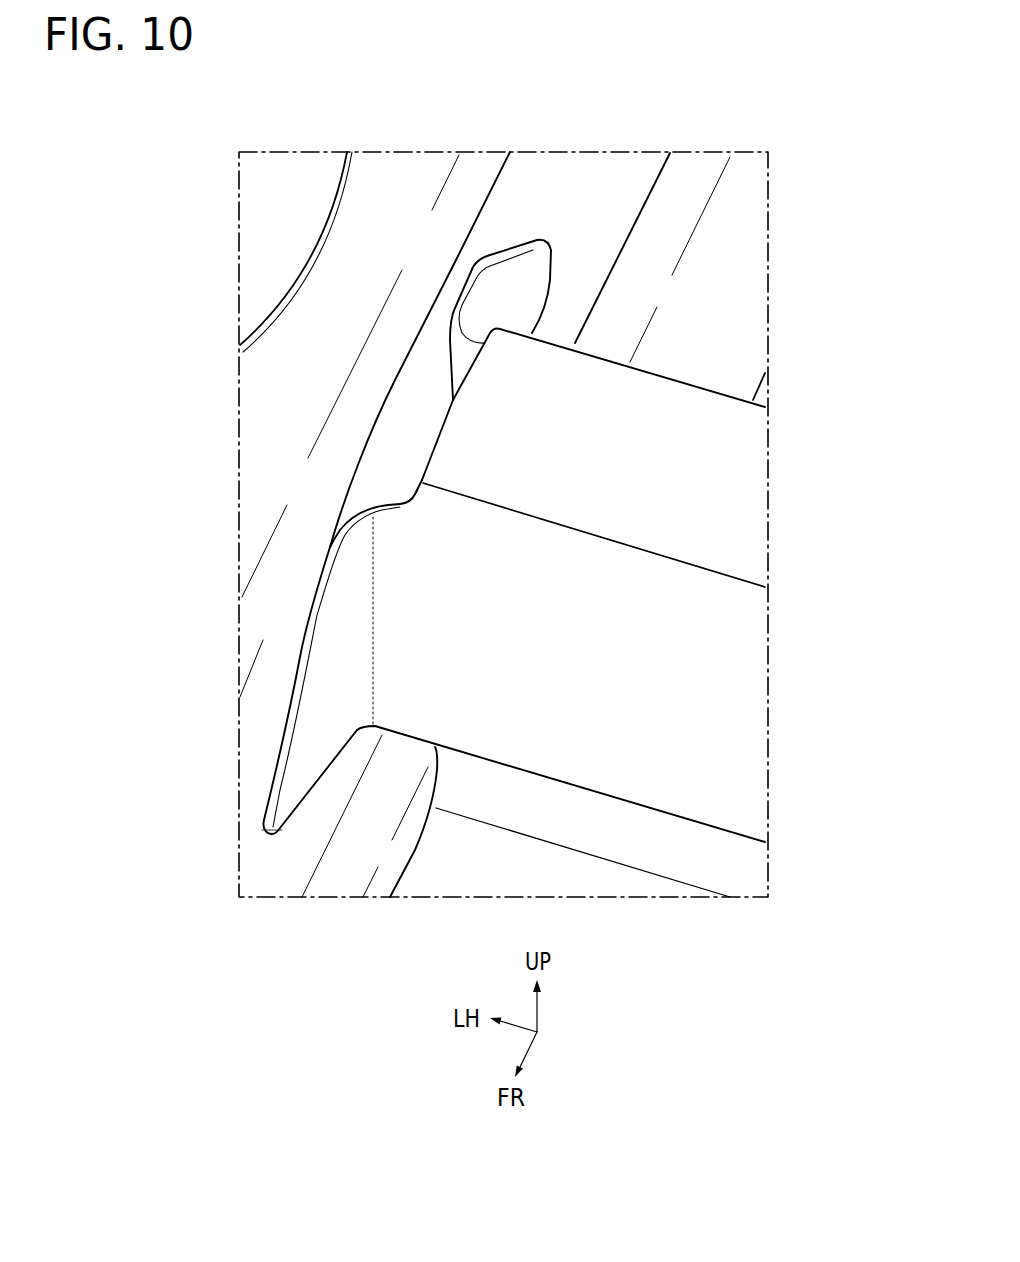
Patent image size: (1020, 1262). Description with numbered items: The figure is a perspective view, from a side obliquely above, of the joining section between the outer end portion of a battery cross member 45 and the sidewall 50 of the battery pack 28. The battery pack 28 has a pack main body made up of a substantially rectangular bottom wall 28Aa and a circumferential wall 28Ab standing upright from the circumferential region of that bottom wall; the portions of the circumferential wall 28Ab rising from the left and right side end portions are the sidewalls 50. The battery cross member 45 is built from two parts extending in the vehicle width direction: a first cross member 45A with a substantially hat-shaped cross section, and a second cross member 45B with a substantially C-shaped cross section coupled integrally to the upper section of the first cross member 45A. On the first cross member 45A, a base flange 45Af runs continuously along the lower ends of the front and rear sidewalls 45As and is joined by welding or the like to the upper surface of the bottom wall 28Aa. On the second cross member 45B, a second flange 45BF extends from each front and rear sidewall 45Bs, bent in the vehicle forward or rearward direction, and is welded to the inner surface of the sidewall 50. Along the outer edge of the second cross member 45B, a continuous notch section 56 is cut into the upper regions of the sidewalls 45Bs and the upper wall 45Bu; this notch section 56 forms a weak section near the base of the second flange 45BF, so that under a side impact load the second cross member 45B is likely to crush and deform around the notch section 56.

The battery pack 28 is at (236, 664).
The bottom wall 28Aa is at (420, 883).
The circumferential wall 28Ab is at (258, 996).
The sidewall 50 is at (277, 848).
The battery cross member 45 is at (718, 384).
The first cross member 45A is at (727, 867).
The sidewall of first cross member 45As is at (670, 855).
The base flange 45Af is at (647, 882).
The second cross member 45B is at (733, 465).
The upper wall 45Bu is at (507, 420).
The sidewall of second cross member 45Bs is at (530, 653).
The second flange 45BF is at (517, 264).
The notch section 56 is at (402, 505).